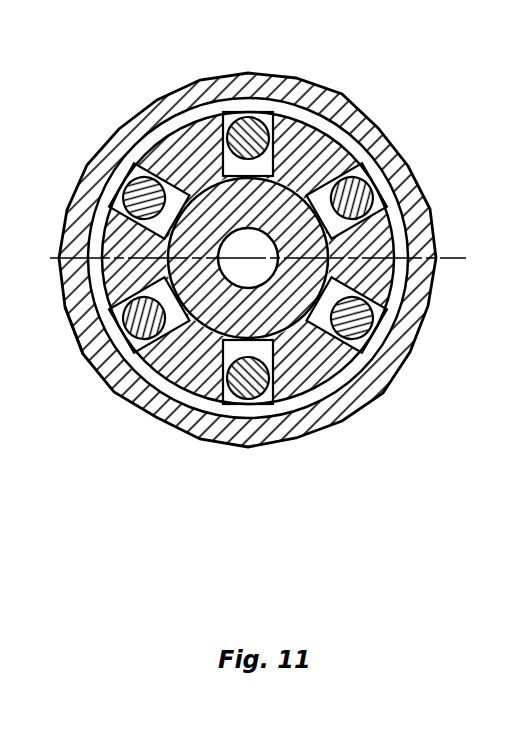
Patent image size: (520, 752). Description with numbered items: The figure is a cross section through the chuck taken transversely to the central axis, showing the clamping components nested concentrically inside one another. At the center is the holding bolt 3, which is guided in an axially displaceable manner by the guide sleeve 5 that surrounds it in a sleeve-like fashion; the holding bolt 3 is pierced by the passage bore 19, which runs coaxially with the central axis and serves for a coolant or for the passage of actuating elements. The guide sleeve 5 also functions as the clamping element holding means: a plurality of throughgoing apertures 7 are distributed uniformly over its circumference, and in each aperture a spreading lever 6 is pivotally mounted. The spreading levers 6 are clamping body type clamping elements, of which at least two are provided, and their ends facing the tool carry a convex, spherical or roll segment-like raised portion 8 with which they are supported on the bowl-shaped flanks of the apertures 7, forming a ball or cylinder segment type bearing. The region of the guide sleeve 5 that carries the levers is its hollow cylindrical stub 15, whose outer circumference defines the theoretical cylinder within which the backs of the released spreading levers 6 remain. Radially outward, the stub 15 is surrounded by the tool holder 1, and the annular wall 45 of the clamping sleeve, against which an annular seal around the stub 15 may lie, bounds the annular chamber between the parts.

The tool holder 1 is at (372, 102).
The holding bolt 3 is at (193, 190).
The guide sleeve 5 is at (402, 280).
The spreading levers 6 is at (256, 110).
The throughgoing apertures 7 is at (300, 125).
The raised portion 8 is at (240, 118).
The hollow cylindrical stub 15 is at (180, 375).
The passage bore 19 is at (240, 249).
The annular wall 45 is at (67, 310).